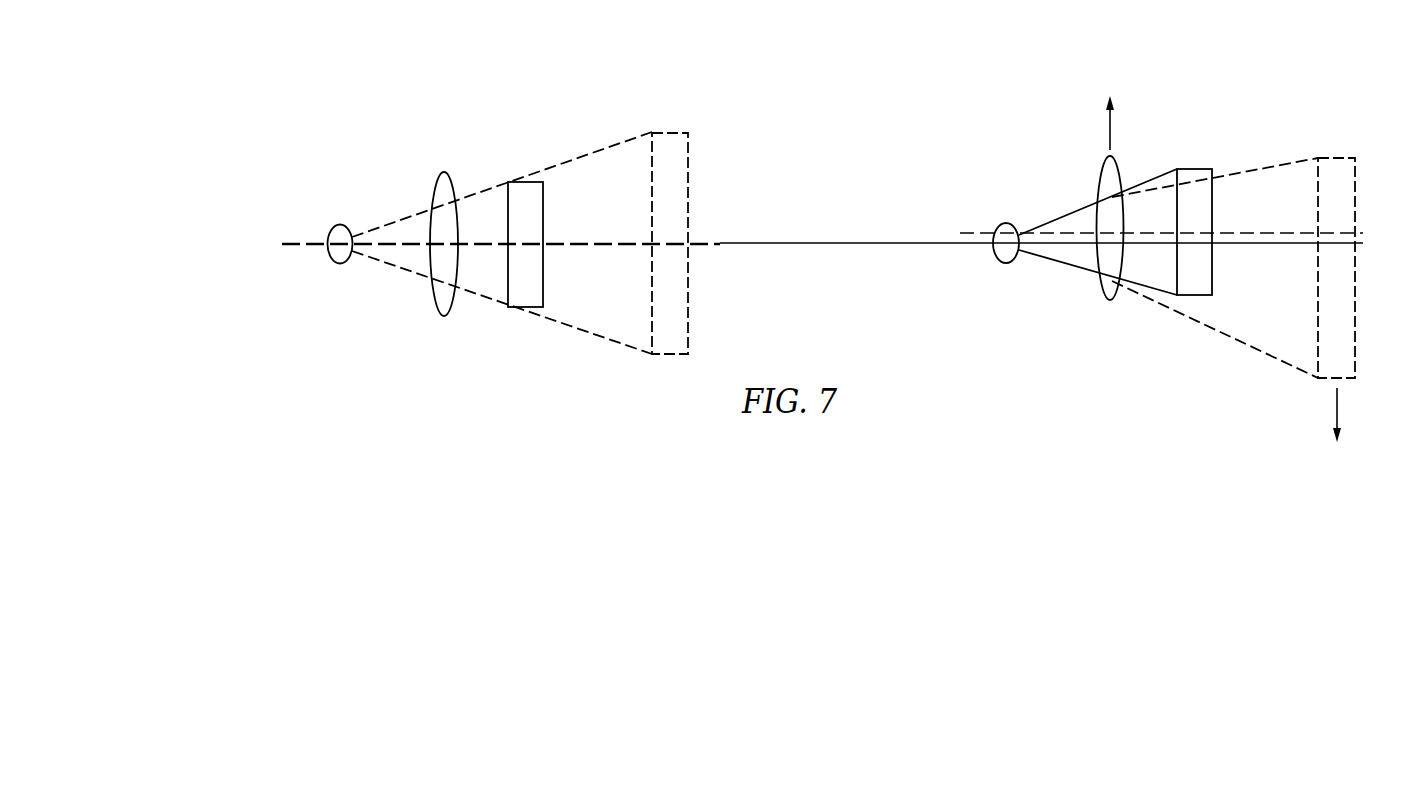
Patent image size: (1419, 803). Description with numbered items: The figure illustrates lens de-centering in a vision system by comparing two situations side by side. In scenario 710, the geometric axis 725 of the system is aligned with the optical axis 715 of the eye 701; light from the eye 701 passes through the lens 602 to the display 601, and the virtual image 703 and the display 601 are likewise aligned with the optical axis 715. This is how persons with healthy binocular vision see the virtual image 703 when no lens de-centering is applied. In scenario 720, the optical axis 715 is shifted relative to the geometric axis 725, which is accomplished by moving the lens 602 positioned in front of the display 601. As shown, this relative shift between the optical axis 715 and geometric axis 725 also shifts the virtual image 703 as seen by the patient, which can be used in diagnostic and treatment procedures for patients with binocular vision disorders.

The scenario 710 is at (482, 108).
The scenario 720 is at (1230, 110).
The eye 701 is at (340, 265).
The lens 602 is at (440, 313).
The display 601 is at (527, 308).
The virtual image 703 is at (688, 322).
The geometric axis 725 is at (803, 243).
The optical axis 715 is at (975, 233).